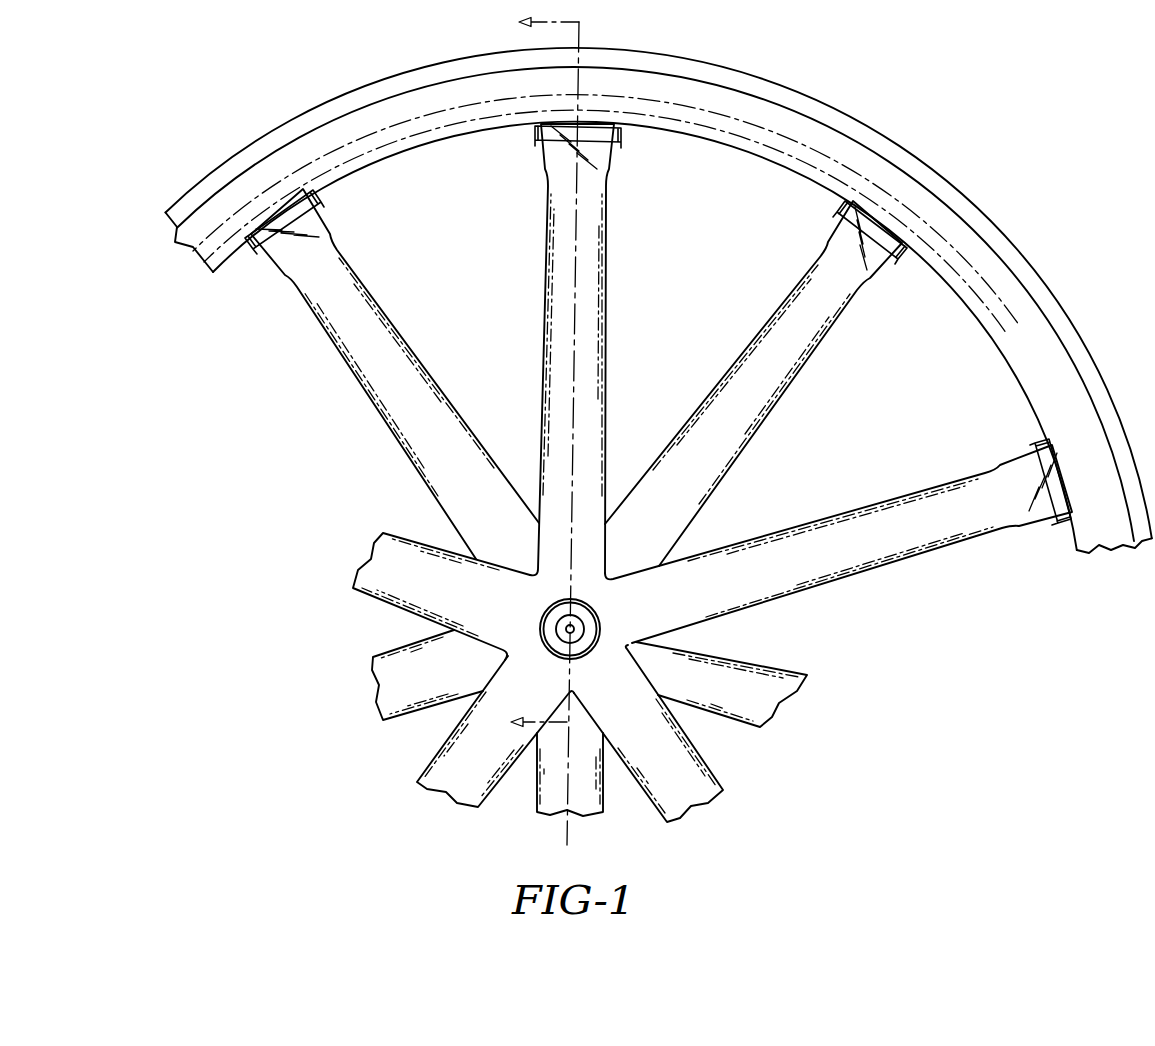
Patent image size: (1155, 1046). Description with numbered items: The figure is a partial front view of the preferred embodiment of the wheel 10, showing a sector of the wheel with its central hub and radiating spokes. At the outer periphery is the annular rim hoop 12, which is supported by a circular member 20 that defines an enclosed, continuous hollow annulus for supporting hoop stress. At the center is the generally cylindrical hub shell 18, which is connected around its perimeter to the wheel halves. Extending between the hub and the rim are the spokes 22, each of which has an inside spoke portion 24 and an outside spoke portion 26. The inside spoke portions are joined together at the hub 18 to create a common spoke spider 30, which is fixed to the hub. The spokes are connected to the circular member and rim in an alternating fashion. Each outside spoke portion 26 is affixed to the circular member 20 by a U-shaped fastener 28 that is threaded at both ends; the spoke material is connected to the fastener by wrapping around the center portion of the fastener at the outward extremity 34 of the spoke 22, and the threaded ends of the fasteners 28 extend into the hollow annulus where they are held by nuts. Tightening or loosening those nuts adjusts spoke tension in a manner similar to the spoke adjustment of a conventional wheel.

The wheel 10 is at (348, 427).
The rim hoop 12 is at (1023, 265).
The hub shell 18 is at (590, 600).
The circular member 20 is at (331, 140).
The spokes 22 is at (610, 248).
The inside spoke portion 24 is at (565, 445).
The outside spoke portion 26 is at (602, 167).
The U-shaped fasteners 28 is at (623, 140).
The spoke spider 30 is at (613, 640).
The outward extremity 34 is at (303, 226).